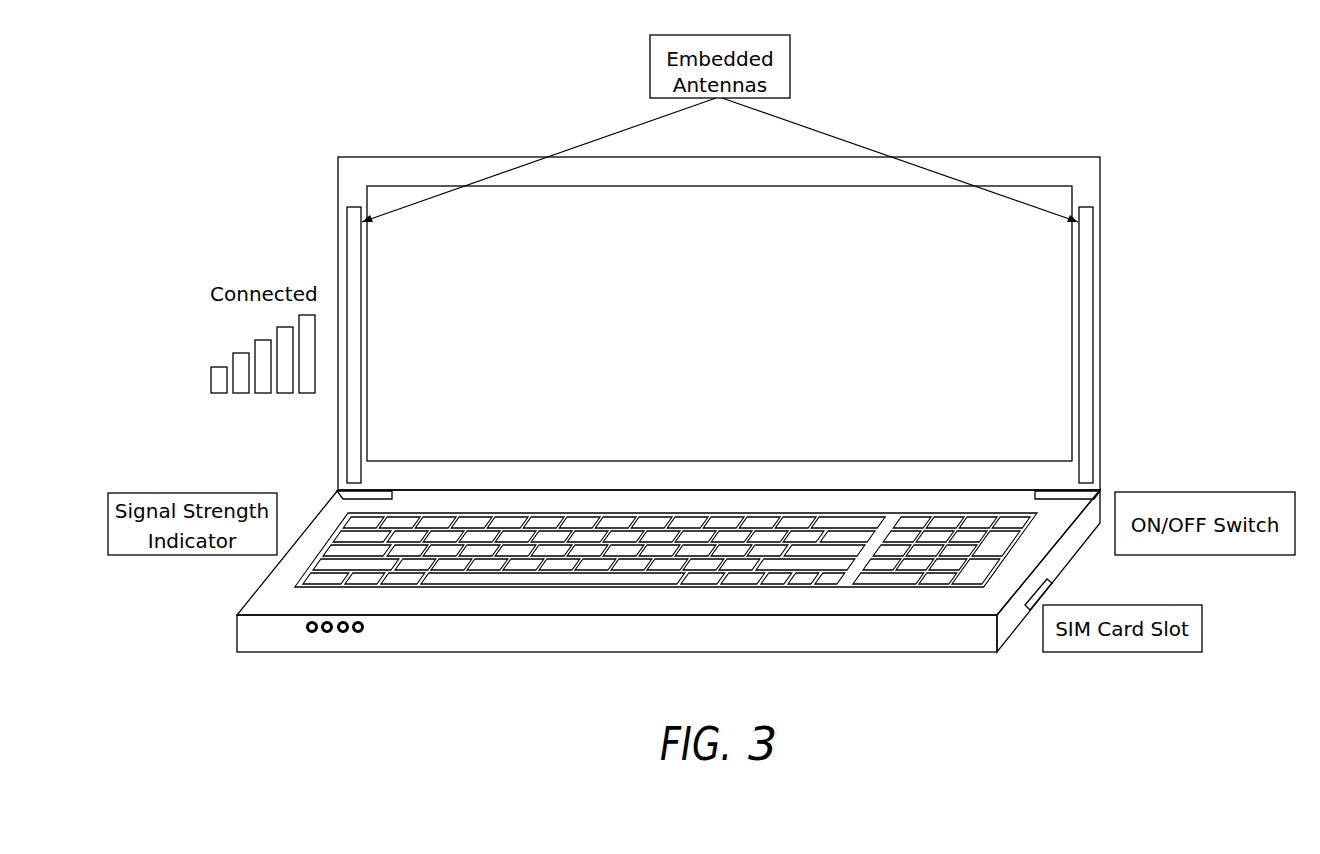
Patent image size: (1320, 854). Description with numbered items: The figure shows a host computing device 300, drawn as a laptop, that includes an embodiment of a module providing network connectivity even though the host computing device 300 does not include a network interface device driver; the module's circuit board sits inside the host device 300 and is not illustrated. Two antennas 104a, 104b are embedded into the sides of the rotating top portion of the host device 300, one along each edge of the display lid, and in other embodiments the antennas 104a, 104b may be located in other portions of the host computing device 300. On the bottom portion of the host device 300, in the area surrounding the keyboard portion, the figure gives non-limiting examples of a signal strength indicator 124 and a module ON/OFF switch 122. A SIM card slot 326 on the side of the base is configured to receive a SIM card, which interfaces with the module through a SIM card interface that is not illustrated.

The host computing device 300 is at (1066, 82).
The antenna 104a is at (1093, 230).
The antenna 104b is at (347, 229).
The signal strength indicator 124 is at (338, 492).
The module ON/OFF switch 122 is at (1097, 493).
The SIM card slot 326 is at (1042, 597).